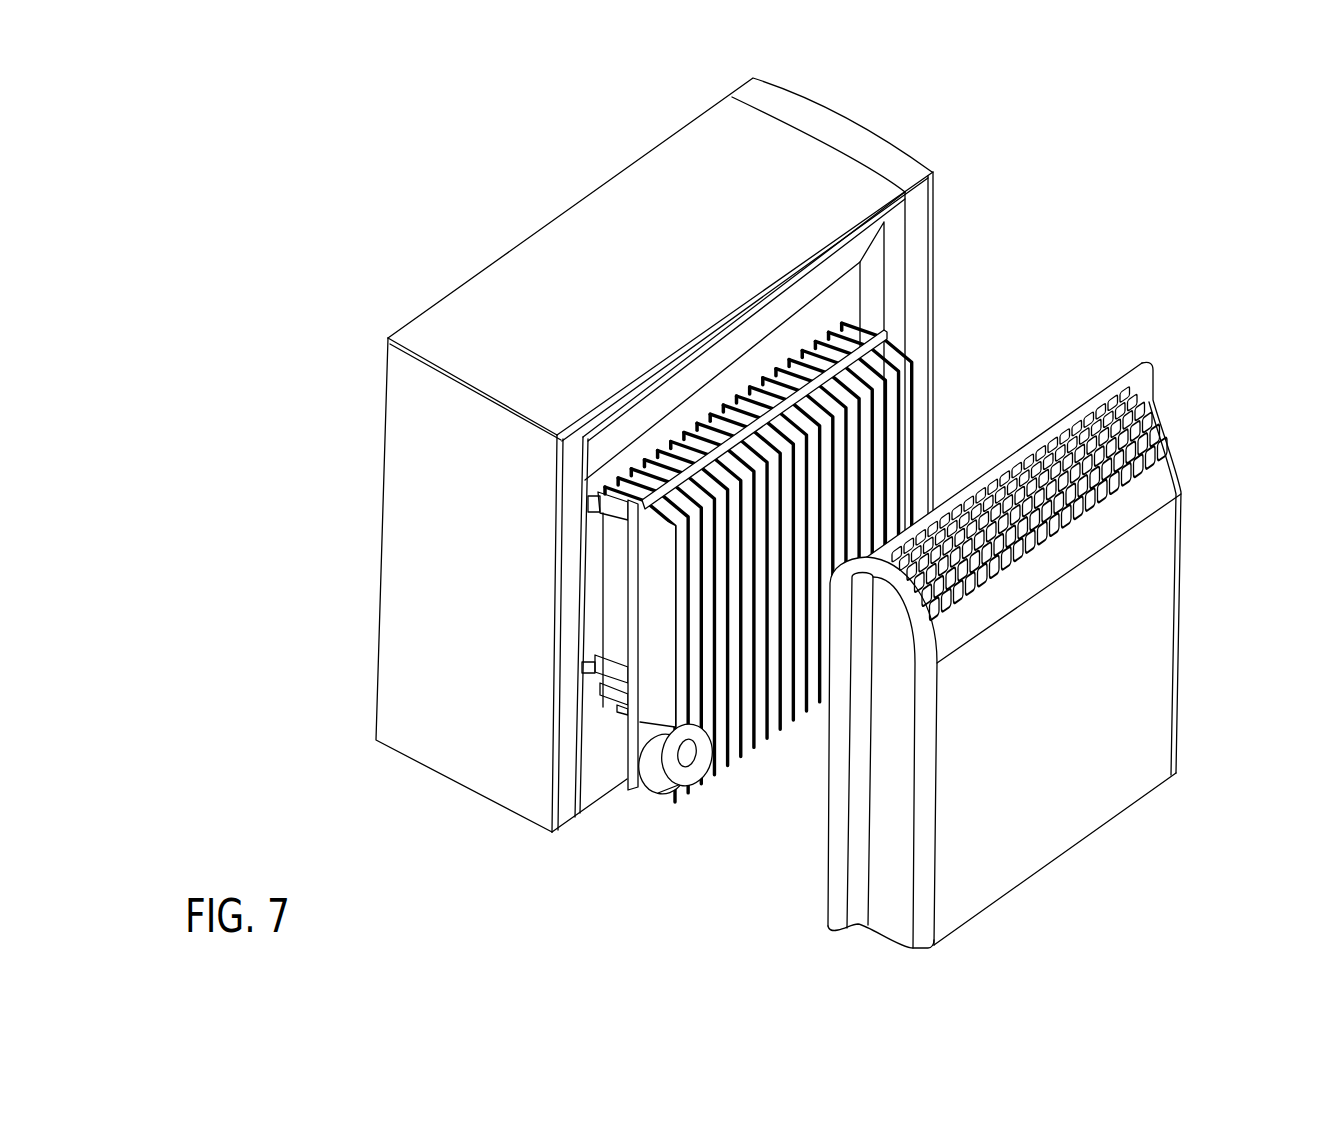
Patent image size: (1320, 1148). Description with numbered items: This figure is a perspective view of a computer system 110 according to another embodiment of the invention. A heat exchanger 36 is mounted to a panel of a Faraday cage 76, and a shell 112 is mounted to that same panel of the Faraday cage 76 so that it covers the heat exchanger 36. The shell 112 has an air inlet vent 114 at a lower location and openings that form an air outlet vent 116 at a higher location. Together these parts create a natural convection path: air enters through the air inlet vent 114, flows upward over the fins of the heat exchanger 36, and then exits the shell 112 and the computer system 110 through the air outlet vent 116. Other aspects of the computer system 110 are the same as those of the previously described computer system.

The computer system 110 is at (654, 484).
The heat exchanger 36 is at (918, 412).
The Faraday cage 76 is at (497, 783).
The shell 112 is at (1045, 656).
The air inlet vent 114 is at (1047, 882).
The air outlet vent 116 is at (1157, 453).